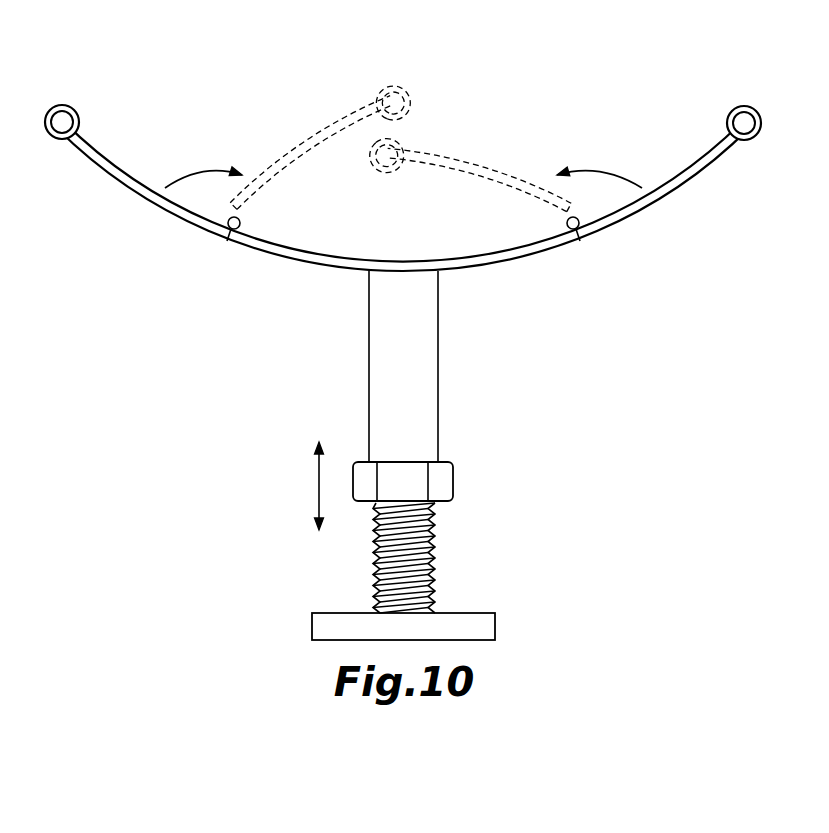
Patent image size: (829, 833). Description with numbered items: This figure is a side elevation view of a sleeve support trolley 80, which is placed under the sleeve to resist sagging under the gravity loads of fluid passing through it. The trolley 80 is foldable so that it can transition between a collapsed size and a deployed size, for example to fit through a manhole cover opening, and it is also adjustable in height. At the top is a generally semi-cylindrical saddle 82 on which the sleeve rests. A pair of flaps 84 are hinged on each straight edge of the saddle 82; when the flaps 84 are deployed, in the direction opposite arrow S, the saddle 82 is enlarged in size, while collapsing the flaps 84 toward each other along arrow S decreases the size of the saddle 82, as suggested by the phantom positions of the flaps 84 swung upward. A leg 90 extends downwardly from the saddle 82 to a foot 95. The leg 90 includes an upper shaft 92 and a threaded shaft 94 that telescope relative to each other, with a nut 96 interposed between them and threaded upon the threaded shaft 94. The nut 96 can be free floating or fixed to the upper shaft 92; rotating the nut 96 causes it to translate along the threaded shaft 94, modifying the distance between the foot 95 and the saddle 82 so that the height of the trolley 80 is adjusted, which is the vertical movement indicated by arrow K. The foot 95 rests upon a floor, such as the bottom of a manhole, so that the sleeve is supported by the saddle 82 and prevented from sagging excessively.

The sleeve support trolley 80 is at (693, 466).
The saddle 82 is at (343, 255).
The flaps 84 is at (143, 182).
The leg 90 is at (338, 358).
The upper shaft 92 is at (428, 376).
The threaded shaft 94 is at (436, 549).
The foot 95 is at (490, 625).
The nut 96 is at (453, 484).
The arrow S is at (202, 170).
The vertical adjustment direction K is at (318, 485).